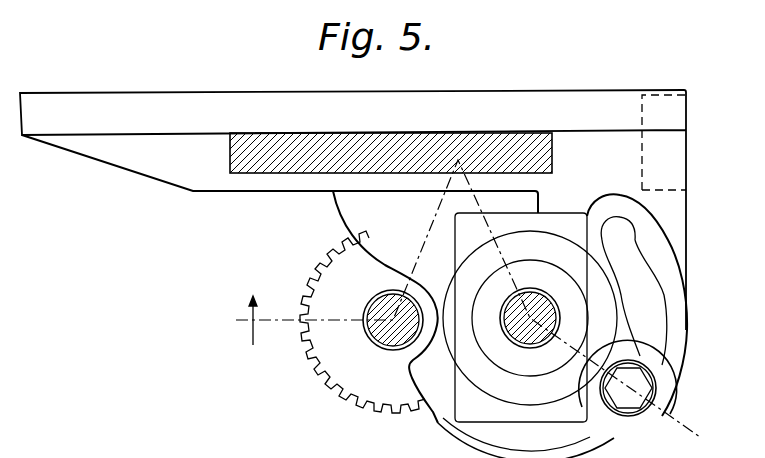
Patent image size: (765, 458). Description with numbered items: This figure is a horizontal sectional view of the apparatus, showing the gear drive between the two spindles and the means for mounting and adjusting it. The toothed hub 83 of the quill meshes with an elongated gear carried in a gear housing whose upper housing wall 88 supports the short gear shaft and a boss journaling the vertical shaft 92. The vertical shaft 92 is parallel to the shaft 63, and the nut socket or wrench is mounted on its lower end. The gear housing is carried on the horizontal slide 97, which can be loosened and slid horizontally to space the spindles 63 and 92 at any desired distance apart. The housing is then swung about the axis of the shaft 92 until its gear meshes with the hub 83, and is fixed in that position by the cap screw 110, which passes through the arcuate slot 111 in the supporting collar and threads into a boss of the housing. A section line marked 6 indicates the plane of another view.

The horizontal slide 97 is at (146, 179).
The upper housing wall 88 is at (385, 307).
The shaft 63 is at (380, 338).
The hub 83 is at (333, 386).
The vertical shaft 92 is at (536, 296).
The arcuate slot 111 is at (657, 292).
The cap screw 110 is at (640, 391).
The section line 6- 6 is at (467, 305).